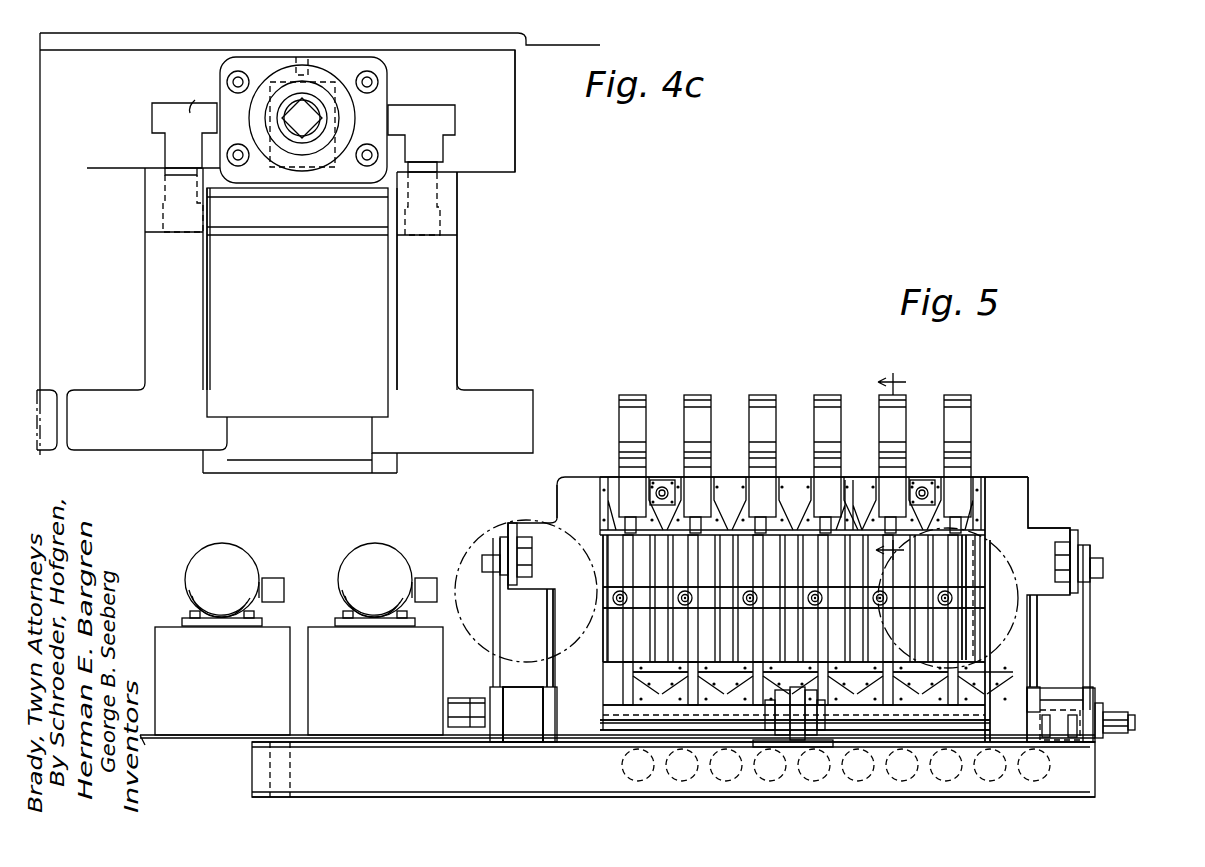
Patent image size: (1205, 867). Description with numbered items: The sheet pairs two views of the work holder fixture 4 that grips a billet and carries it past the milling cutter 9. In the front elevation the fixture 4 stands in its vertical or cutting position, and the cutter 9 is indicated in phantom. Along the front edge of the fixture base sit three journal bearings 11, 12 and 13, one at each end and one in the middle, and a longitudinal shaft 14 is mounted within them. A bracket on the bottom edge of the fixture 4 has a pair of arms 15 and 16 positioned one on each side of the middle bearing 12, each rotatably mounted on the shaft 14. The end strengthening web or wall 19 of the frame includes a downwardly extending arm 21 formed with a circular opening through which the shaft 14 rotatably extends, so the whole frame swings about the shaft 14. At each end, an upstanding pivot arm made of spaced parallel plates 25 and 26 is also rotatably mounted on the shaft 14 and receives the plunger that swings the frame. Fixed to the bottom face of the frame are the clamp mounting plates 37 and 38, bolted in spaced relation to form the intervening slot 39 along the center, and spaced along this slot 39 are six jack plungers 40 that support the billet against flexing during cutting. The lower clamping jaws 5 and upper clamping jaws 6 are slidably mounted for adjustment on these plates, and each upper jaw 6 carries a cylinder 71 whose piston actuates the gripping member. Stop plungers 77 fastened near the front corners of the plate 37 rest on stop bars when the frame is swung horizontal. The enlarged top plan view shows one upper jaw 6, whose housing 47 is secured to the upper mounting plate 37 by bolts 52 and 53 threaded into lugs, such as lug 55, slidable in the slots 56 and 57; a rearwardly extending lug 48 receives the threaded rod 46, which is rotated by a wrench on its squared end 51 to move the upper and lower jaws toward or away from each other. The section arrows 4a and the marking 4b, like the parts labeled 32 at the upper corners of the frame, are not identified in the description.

In FIG. 5, the work holder fixture 4 is at (793, 476).
In FIG. 5, the section line 4a is at (883, 460).
In FIG. 5, the lower beam 4b is at (880, 735).
In FIG. 5, the lower clamping jaws 5 is at (845, 668).
In FIG. 5, the upper clamping jaws 6 is at (856, 495).
In FIG. 5, the milling cutter 9 is at (462, 545).
In FIG. 5, the journal bearing 11 is at (1045, 750).
In FIG. 5, the journal bearing 12 is at (796, 705).
In FIG. 5, the journal bearing 13 is at (524, 726).
In FIG. 5, the longitudinal shaft 14 is at (1136, 719).
In FIG. 5, the bracket arm 15 is at (812, 705).
In FIG. 5, the bracket arm 16 is at (778, 705).
In FIG. 5, the end strengthening web 19 is at (588, 675).
In FIG. 5, the downwardly extending arm 21 is at (1018, 729).
In FIG. 5, the pivot arm plate 25 is at (1035, 650).
In FIG. 5, the pivot arm plate 26 is at (492, 668).
In FIG. 5, the frame 32 is at (542, 512).
In FIG. 4c, the upper clamp mounting plate 37 is at (510, 91).
In FIG. 5, the upper clamp mounting plate 37 is at (975, 567).
In FIG. 5, the lower clamp mounting plate 38 is at (942, 640).
In FIG. 5, the intervening slot 39 is at (778, 605).
In FIG. 5, the jack plungers 40 is at (683, 594).
In FIG. 4c, the threaded rod 46 is at (280, 113).
In FIG. 5, the threaded rod 46 is at (690, 645).
In FIG. 4c, the housing 47 is at (398, 305).
In FIG. 4c, the rearwardly extending lug 48 is at (385, 92).
In FIG. 4c, the squared end 51 is at (322, 122).
In FIG. 4c, the bolt 52 is at (430, 168).
In FIG. 4c, the bolt 53 is at (180, 166).
In FIG. 4c, the lug 55 is at (170, 122).
In FIG. 4c, the slot 56 is at (440, 106).
In FIG. 4c, the slot 57 is at (194, 103).
In FIG. 4c, the cylinder 71 is at (312, 322).
In FIG. 5, the cylinder 71 is at (690, 445).
In FIG. 5, the stop plungers 77 is at (661, 486).